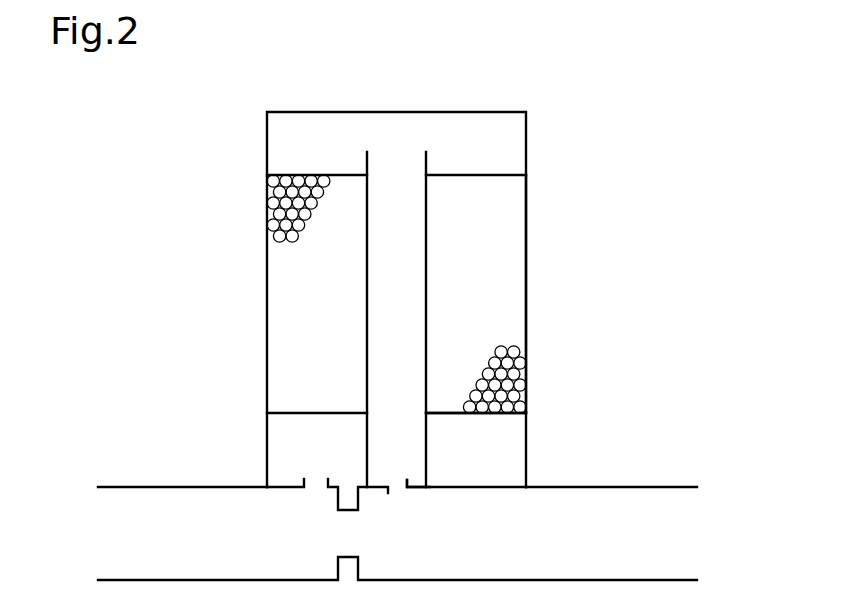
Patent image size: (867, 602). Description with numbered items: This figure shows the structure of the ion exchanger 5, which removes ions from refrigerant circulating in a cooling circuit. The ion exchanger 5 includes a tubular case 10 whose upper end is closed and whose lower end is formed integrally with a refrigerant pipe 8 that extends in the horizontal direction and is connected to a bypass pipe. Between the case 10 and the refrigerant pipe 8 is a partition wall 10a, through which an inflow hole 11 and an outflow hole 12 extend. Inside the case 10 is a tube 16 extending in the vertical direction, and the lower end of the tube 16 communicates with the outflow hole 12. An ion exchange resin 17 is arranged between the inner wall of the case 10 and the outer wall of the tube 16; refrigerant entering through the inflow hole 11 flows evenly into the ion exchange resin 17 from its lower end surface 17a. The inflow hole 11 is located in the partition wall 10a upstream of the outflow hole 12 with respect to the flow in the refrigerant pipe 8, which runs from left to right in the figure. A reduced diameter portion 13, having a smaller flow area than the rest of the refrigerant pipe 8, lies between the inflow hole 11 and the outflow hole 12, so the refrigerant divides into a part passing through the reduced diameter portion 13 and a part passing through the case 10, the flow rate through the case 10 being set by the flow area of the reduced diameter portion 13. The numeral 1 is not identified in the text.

The ion exchanger 5 is at (245, 132).
The magnetic particles / filler 1 is at (267, 189).
The refrigerant pipe 8 is at (157, 486).
The case 10 is at (267, 440).
The partition wall 10a is at (289, 486).
The inflow hole 11 is at (305, 482).
The outflow hole 12 is at (408, 489).
The reduced diameter portion 13 is at (338, 563).
The tube 16 is at (367, 276).
The ion exchange resin 17 is at (527, 274).
The lower end surface 17a is at (449, 414).